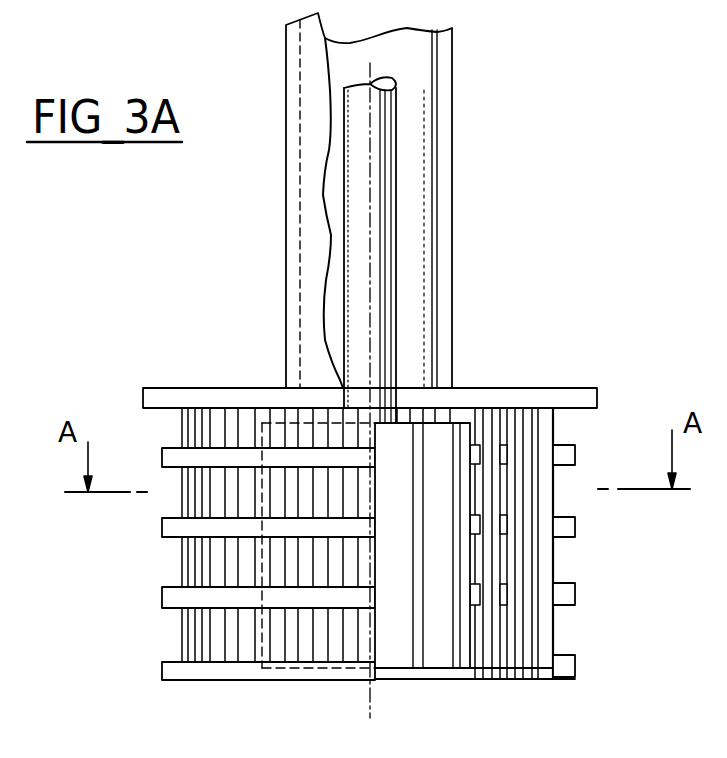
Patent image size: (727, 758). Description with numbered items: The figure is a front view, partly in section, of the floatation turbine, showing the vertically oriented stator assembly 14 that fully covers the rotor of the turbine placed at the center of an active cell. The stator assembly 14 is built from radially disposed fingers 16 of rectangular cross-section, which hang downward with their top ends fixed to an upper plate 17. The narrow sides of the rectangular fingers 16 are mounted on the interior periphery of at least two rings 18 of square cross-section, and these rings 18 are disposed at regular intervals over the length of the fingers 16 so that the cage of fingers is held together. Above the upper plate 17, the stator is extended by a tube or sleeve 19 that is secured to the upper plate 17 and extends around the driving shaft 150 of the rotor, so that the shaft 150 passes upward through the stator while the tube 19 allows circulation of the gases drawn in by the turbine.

The stator assembly 14 is at (510, 397).
The fingers 16 is at (545, 637).
The upper plate 17 is at (188, 402).
The rings 18 is at (567, 593).
The tube or sleeve 19 is at (443, 243).
The driving shaft 150 is at (380, 157).